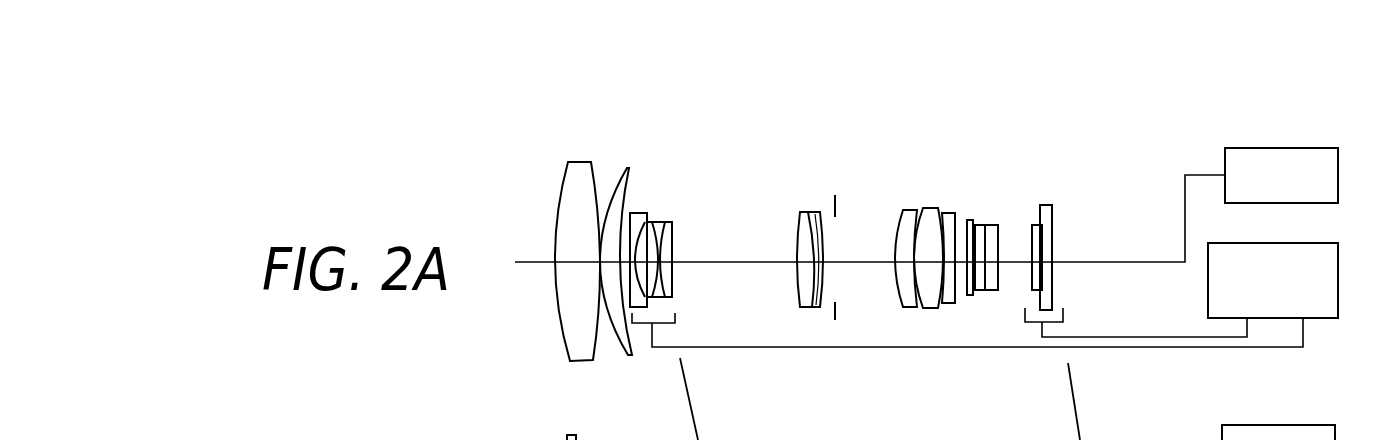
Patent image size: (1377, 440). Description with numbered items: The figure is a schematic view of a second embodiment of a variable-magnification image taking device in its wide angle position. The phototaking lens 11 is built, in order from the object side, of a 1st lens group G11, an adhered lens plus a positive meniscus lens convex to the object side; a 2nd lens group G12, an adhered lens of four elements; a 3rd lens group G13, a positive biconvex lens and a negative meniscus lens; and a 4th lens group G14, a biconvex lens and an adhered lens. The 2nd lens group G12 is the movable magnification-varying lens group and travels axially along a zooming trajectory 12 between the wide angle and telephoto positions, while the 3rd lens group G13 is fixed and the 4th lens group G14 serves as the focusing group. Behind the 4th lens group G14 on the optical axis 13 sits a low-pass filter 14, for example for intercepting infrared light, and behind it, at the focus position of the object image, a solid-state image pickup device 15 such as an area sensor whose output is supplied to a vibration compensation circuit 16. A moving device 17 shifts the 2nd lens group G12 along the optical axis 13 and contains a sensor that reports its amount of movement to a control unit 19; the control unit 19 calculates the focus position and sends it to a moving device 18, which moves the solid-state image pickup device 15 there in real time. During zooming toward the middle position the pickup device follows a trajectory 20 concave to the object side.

The phototaking lens 11 is at (1008, 83).
The 1st lens group G11 is at (652, 142).
The 2nd lens group G12 is at (680, 205).
The 3rd lens group G13 is at (830, 195).
The 4th lens group G14 is at (962, 198).
The zooming trajectory 12 is at (693, 413).
The optical axis 13 is at (730, 262).
The low-pass filter 14 is at (993, 225).
The solid-state image pickup device 15 is at (1051, 221).
The vibration compensation circuit 16 is at (1308, 148).
The moving device 17 is at (675, 315).
The moving device 18 is at (1063, 312).
The control unit 19 is at (1208, 298).
The trajectory 20 is at (1078, 410).